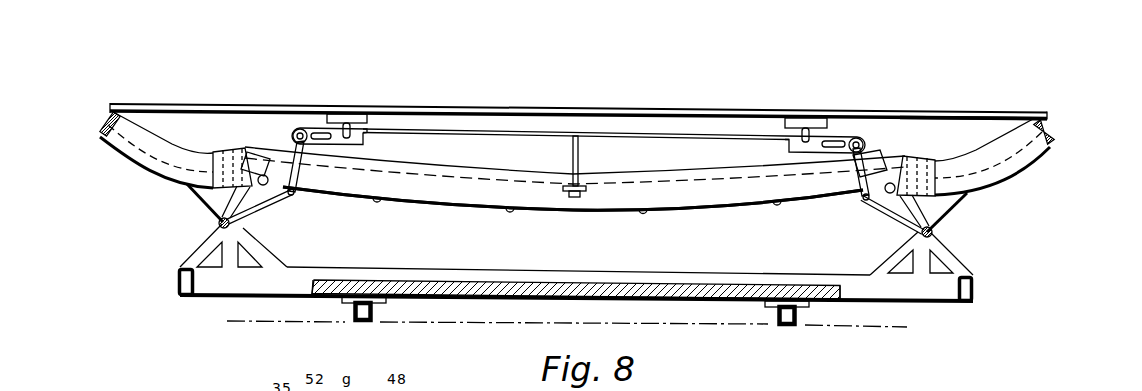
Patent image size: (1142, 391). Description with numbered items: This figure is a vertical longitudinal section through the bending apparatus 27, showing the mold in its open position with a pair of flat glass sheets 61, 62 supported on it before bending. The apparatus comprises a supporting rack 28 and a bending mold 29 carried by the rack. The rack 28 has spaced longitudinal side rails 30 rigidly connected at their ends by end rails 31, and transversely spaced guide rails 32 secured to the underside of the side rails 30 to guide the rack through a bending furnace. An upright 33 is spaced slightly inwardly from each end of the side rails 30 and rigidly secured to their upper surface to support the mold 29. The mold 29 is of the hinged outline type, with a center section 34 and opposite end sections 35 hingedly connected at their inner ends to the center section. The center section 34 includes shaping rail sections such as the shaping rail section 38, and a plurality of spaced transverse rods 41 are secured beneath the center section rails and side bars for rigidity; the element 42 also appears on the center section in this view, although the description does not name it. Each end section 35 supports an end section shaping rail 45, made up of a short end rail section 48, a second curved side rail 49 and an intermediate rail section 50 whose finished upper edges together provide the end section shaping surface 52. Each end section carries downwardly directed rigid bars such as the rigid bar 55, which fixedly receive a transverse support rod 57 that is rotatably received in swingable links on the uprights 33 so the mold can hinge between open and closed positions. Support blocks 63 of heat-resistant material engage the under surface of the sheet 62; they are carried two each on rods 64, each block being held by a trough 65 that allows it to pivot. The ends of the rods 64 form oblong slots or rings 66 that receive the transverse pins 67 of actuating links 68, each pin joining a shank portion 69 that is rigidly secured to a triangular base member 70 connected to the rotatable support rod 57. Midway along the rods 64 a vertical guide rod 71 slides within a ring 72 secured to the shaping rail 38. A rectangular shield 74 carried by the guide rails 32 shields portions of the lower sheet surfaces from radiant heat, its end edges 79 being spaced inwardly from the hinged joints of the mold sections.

The bending apparatus 27 is at (305, 99).
The supporting rack 28 is at (175, 268).
The bending mold 29 is at (564, 205).
The longitudinal side rails 30 is at (352, 267).
The end rails 31 is at (176, 286).
The guide rails 32 is at (376, 314).
The upright 33 is at (231, 243).
The center section 34 is at (434, 199).
The end sections 35 is at (137, 173).
The shaping rail section 38 is at (548, 189).
The transverse rods 41 is at (509, 207).
The curved rail 42 is at (616, 171).
The end section shaping rail 45 is at (121, 143).
The end rail section 48 is at (100, 127).
The second curved side rail 49 is at (206, 178).
The intermediate rail section 50 is at (167, 165).
The end section shaping surface 52 is at (186, 139).
The rigid bar 55 is at (957, 206).
The transverse support rod 57 is at (216, 226).
The glass sheet 61 is at (941, 114).
The glass sheet 62 is at (928, 122).
The support blocks 63 is at (350, 114).
The rods 64 is at (446, 134).
The trough 65 is at (367, 128).
The oblong slots or rings 66 is at (328, 142).
The transverse pin 67 is at (305, 145).
The actuating links 68 is at (292, 211).
The shank portion 69 is at (292, 137).
The triangular base member 70 is at (260, 208).
The guide rod 71 is at (572, 154).
The ring 72 is at (586, 193).
The shield 74 is at (704, 289).
The end edges 79 is at (311, 284).